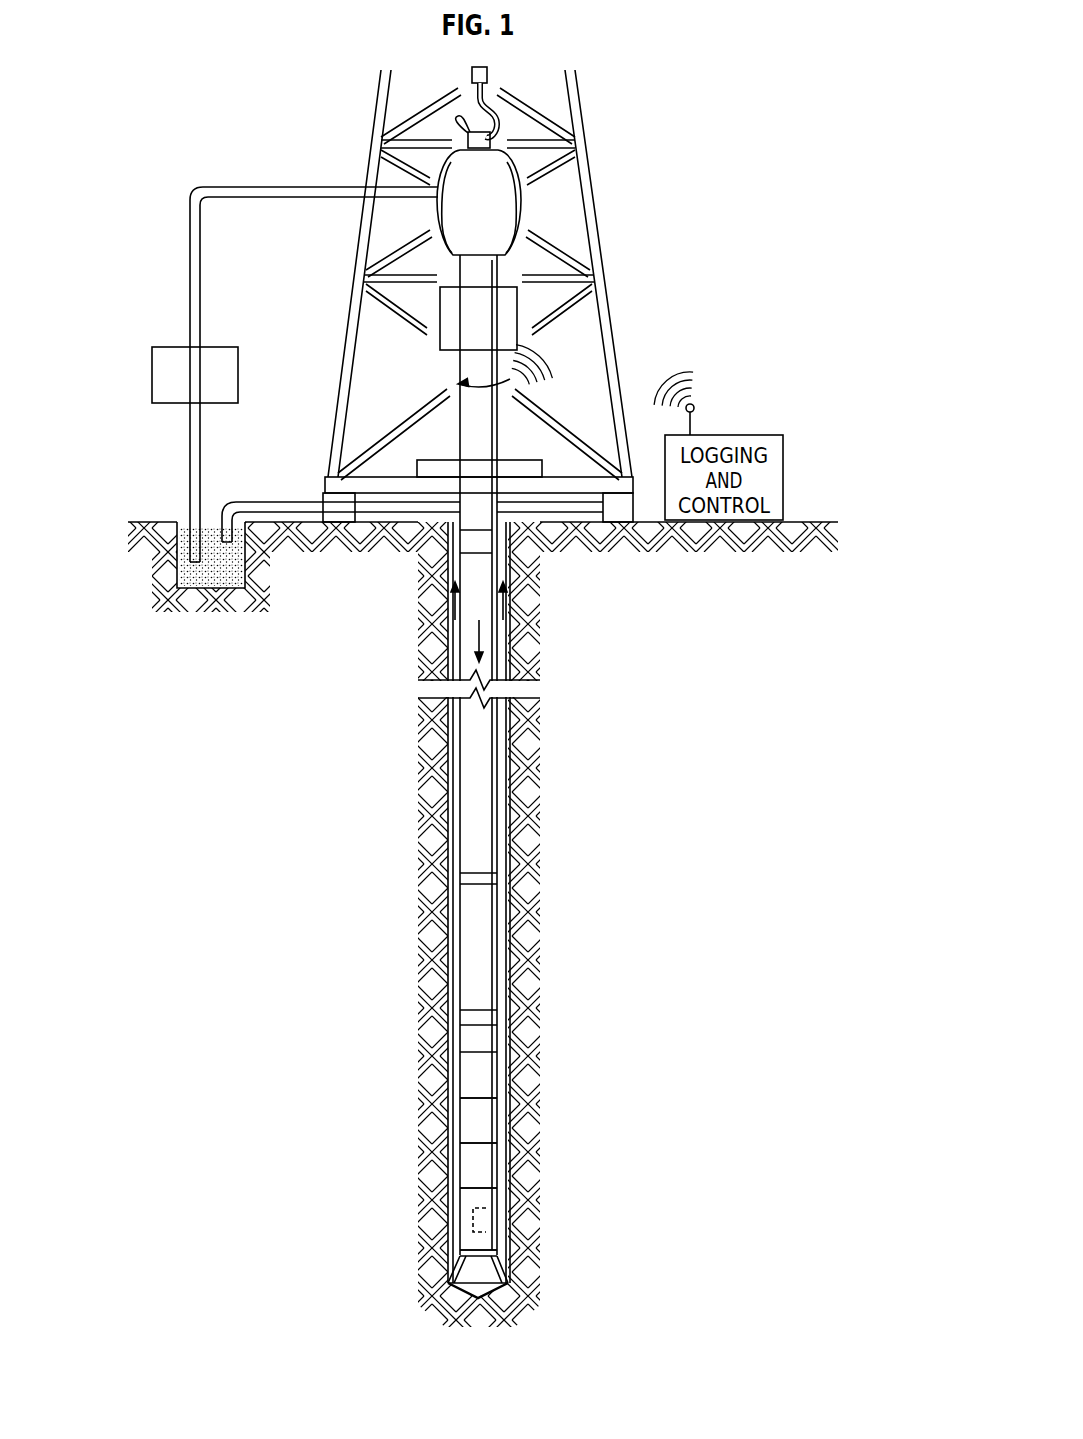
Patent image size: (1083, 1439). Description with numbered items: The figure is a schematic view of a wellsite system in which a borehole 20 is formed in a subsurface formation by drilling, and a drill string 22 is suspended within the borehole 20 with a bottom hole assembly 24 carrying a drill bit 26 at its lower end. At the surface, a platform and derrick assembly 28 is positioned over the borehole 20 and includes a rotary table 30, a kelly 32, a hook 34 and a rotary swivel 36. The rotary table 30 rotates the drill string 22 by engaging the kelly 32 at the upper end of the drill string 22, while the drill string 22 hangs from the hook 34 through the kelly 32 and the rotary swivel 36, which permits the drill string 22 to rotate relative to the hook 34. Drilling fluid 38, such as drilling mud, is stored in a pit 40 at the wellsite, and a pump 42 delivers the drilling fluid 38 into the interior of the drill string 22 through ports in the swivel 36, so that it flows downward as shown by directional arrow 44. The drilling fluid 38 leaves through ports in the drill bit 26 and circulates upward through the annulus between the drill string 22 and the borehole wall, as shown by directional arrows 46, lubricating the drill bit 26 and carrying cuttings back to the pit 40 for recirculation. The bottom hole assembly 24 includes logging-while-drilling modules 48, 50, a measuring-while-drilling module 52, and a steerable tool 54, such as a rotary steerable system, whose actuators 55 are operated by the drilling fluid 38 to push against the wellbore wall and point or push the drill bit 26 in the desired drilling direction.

The borehole 20 is at (504, 812).
The drill string 22 is at (512, 742).
The bottom hole assembly 24 is at (405, 1003).
The drill bit 26 is at (495, 1268).
The platform and derrick assembly 28 is at (636, 184).
The rotary table 30 is at (526, 460).
The kelly 32 is at (463, 440).
The hook 34 is at (493, 104).
The rotary swivel 36 is at (492, 216).
The drilling fluid 38 is at (220, 578).
The pit 40 is at (214, 496).
The pump 42 is at (224, 347).
The directional arrow 44 is at (477, 639).
The directional arrows 46 is at (452, 602).
The logging-while-drilling module 48 is at (487, 1071).
The logging-while-drilling module 50 is at (487, 1165).
The measuring-while-drilling module 52 is at (487, 1118).
The steerable tool 54 is at (487, 1198).
The actuators 55 is at (487, 1218).